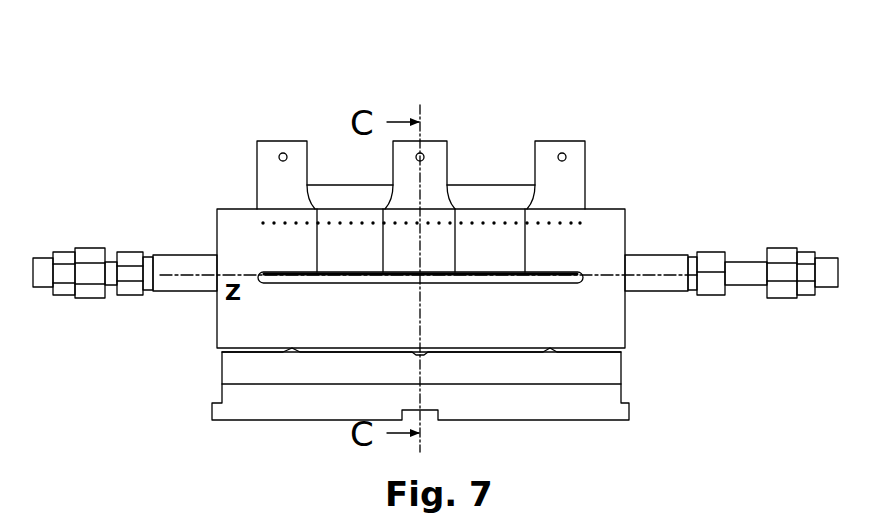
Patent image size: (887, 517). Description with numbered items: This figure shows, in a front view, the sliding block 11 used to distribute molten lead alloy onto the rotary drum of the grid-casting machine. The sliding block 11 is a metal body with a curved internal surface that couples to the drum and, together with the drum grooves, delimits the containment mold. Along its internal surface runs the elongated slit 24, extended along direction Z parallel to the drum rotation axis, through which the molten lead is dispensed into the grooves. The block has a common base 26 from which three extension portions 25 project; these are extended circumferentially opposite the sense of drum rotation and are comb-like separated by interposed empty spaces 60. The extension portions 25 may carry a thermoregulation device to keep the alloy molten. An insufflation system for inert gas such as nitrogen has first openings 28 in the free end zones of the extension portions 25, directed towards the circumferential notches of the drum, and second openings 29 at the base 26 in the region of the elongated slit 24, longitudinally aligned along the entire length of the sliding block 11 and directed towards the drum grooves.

The sliding block 11 is at (603, 121).
The elongated slit 24 is at (507, 285).
The extension portions 25 is at (280, 178).
The common base 26 is at (595, 320).
The first openings 28 is at (281, 153).
The second openings 29 is at (585, 222).
The empty spaces 60 is at (371, 173).